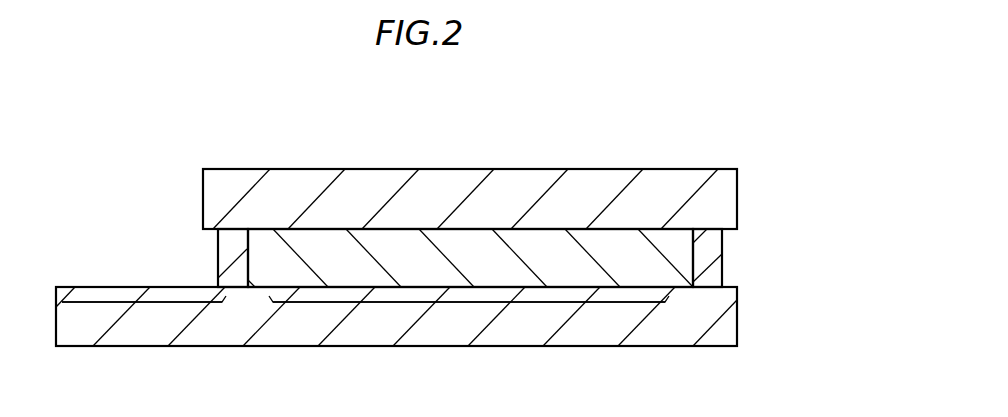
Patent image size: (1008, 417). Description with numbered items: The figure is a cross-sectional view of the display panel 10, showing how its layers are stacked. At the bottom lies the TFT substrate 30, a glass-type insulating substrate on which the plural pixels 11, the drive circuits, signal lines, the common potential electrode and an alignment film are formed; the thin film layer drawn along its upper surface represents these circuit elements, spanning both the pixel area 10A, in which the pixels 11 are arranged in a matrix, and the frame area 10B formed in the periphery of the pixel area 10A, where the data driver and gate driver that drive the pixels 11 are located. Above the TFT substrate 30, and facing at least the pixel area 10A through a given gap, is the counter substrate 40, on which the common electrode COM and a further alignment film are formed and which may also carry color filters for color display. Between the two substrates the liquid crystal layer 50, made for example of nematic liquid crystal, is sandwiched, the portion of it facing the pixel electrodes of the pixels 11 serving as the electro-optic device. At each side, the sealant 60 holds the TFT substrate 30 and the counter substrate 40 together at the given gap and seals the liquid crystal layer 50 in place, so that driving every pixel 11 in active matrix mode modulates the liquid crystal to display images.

The display panel 10 is at (700, 83).
The counter substrate 40 is at (727, 197).
The liquid crystal layer 50 is at (397, 247).
The sealant 60 is at (233, 247).
The common electrode COM is at (510, 226).
The pixel 11 is at (602, 286).
The TFT substrate 30 is at (727, 313).
The pixel area 10A is at (470, 303).
The frame area 10B is at (148, 304).